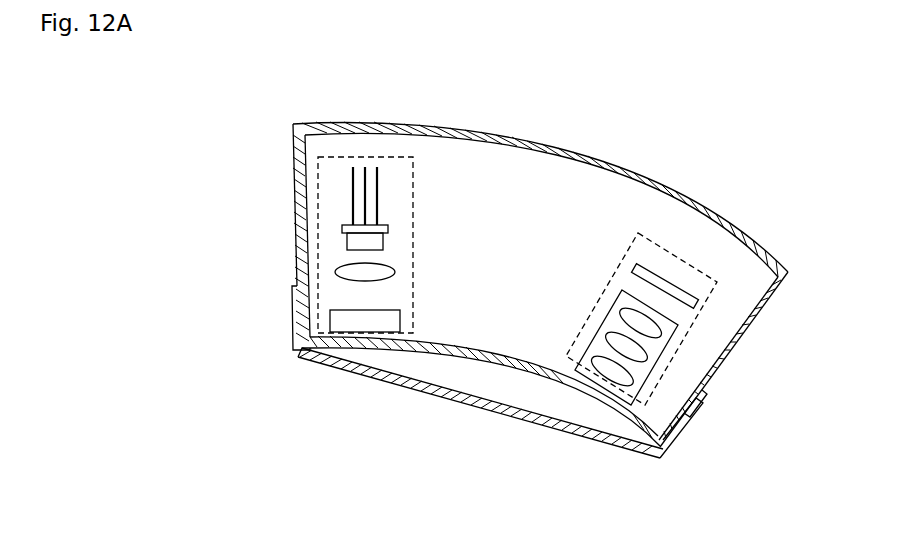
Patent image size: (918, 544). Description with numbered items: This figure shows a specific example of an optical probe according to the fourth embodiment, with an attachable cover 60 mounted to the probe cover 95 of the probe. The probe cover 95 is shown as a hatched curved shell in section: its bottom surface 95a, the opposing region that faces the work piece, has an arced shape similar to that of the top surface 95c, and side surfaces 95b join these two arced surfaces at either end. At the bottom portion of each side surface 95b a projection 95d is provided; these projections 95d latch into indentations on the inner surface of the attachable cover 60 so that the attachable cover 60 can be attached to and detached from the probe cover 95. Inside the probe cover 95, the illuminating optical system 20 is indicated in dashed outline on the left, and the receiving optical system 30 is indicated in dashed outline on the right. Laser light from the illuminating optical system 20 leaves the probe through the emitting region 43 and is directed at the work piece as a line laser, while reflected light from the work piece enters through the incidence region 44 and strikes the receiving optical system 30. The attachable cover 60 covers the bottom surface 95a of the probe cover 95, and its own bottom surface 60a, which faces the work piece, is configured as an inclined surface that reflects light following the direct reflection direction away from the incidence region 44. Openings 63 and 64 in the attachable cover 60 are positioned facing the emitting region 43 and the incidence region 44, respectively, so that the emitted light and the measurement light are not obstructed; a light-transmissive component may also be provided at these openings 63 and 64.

The illuminating optical system 20 is at (367, 157).
The receiving optical system 30 is at (694, 262).
The emitting region 43 is at (382, 332).
The incidence region 44 is at (592, 388).
The attachable cover 60 is at (680, 450).
The bottom surface 60a is at (447, 404).
The opening 63 is at (381, 374).
The opening 64 is at (598, 452).
The probe cover 95 is at (591, 150).
The bottom surface 95a is at (490, 364).
The side surfaces 95b is at (296, 210).
The top surface 95c is at (500, 128).
The projection 95d is at (296, 306).